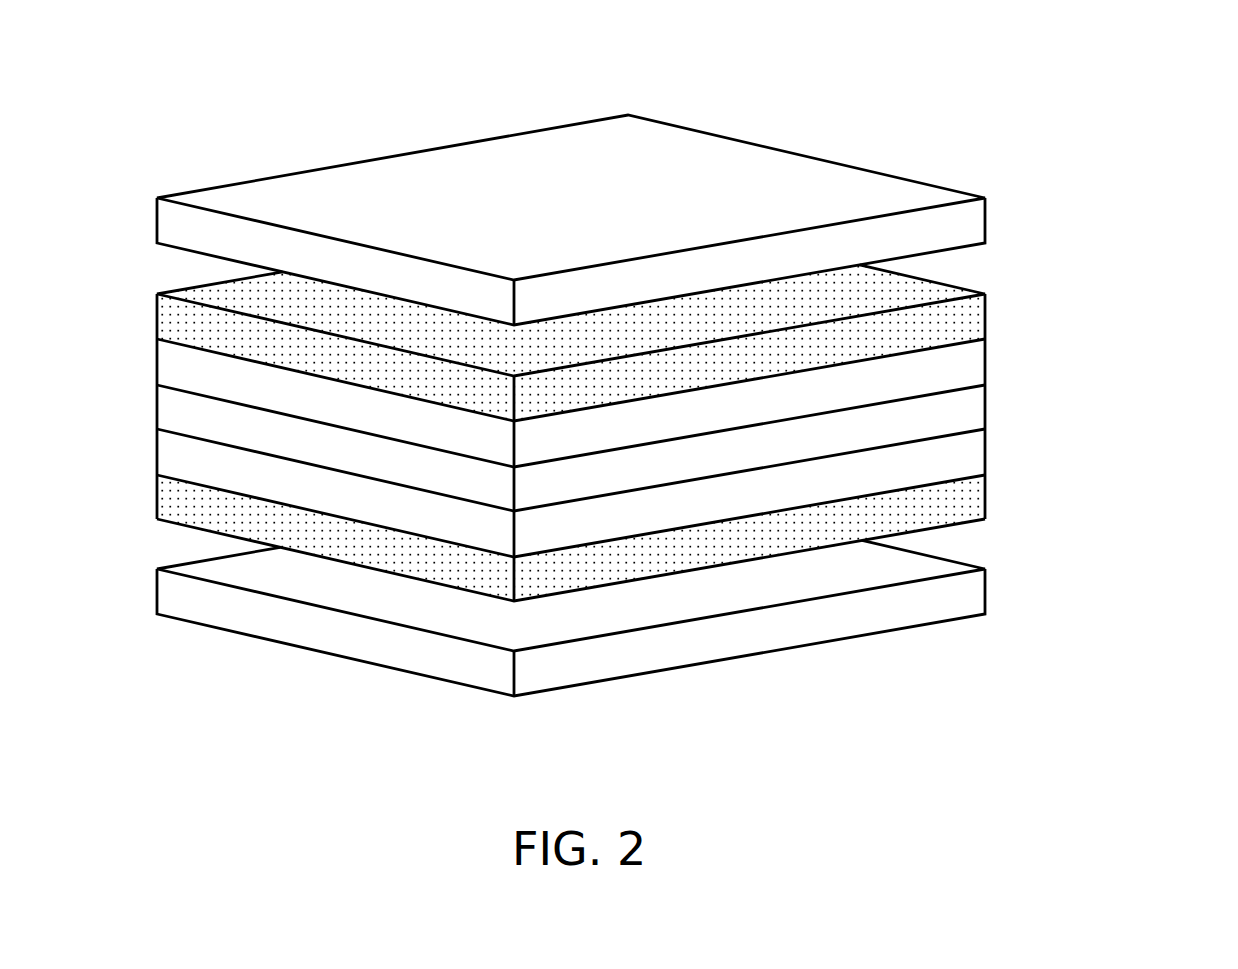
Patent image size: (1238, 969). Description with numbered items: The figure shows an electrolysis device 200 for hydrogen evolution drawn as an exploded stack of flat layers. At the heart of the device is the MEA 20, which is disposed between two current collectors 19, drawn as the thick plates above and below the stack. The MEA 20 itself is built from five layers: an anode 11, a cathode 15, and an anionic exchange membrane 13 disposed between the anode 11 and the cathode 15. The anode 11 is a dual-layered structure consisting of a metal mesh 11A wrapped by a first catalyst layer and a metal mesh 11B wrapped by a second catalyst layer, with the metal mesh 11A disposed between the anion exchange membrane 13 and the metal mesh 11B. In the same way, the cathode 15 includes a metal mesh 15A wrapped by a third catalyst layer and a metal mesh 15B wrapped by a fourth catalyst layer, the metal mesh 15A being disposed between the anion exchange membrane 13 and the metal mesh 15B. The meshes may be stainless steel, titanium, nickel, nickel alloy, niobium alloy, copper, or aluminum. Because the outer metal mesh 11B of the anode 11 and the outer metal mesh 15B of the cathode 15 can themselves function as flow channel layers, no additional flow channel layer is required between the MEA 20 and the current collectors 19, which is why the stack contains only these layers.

The electrolysis device 200 is at (153, 61).
The MEA 20 is at (683, 433).
The current collectors 19 is at (964, 225).
The anode 11 is at (656, 366).
The metal mesh 11A is at (965, 365).
The metal mesh 11B is at (965, 321).
The anionic exchange membrane 13 is at (965, 411).
The cathode 15 is at (656, 518).
The metal mesh 15A is at (965, 453).
The metal mesh 15B is at (965, 498).